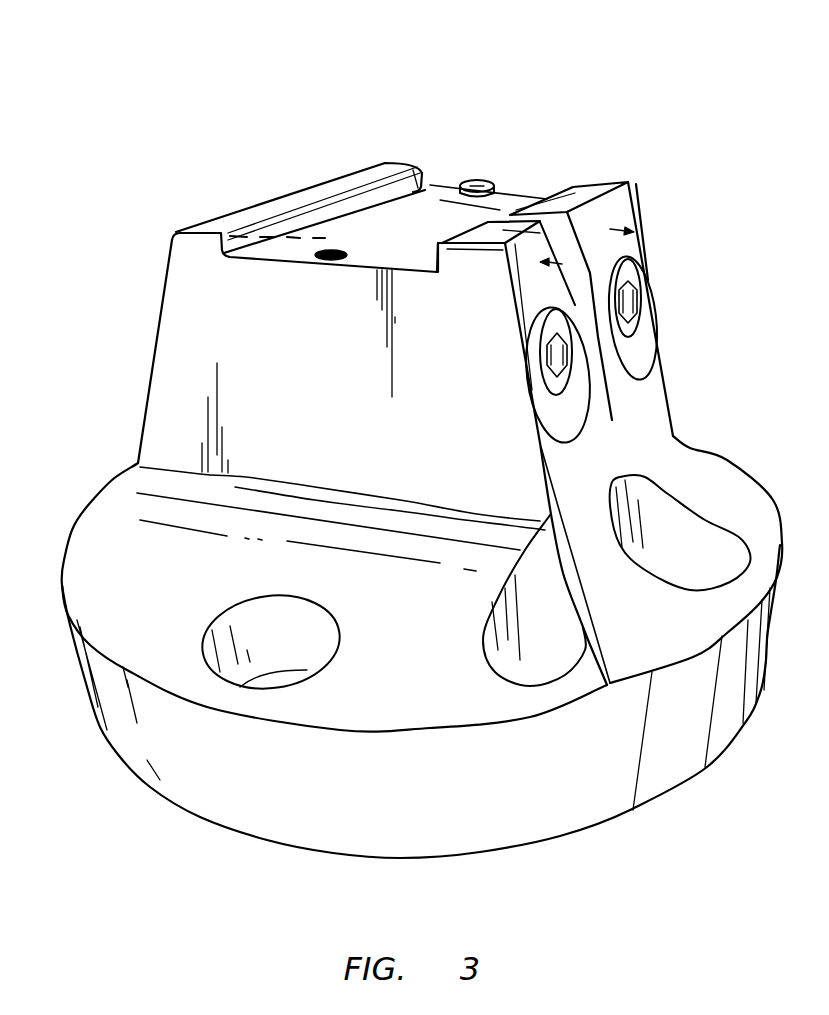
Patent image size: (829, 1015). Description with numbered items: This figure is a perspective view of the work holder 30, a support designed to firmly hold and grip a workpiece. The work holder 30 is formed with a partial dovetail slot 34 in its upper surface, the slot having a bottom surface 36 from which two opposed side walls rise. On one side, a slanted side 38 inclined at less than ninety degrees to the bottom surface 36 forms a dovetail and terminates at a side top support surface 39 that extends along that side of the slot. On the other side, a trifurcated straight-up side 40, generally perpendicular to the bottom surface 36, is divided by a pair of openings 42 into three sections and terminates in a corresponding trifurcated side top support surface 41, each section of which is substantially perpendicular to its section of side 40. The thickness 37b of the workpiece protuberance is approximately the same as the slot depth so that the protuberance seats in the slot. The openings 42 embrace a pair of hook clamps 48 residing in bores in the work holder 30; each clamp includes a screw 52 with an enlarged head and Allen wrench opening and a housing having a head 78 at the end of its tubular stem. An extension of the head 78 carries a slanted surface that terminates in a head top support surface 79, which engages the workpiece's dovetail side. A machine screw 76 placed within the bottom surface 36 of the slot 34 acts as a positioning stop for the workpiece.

The work holder 30 is at (157, 289).
The partial dovetail slot 34 is at (447, 213).
The bottom surface 36 is at (443, 195).
The thickness of the protuberance 37b is at (260, 272).
The slanted side 38 is at (423, 177).
The side top support surface 39 is at (327, 187).
The trifurcated straight-up side 40 is at (437, 262).
The trifurcated side top support surface 41 is at (540, 215).
The openings 42 is at (440, 230).
The hook clamps 48 is at (560, 264).
The screw 52 is at (560, 358).
The machine screw 76 is at (480, 187).
The head 78 is at (600, 186).
The head top support surface 79 is at (503, 230).